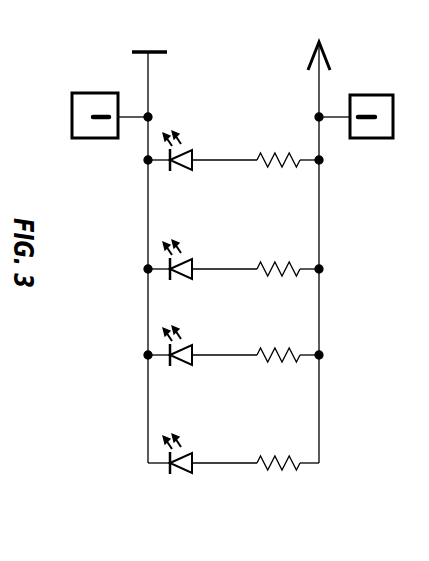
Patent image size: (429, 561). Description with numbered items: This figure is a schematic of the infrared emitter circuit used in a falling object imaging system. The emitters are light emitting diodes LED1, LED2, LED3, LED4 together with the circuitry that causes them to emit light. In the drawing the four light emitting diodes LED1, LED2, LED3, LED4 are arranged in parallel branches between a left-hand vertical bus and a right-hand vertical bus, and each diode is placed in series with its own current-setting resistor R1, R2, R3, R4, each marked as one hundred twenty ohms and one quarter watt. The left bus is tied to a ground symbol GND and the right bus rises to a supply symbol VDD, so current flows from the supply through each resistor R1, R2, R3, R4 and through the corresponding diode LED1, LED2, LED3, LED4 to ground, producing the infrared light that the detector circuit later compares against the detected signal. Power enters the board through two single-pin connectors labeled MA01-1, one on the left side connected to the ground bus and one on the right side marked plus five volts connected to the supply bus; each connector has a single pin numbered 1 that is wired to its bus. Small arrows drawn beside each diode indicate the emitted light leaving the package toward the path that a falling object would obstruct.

The light emitting diode 1 LED1 is at (173, 163).
The light emitting diode 2 LED2 is at (173, 272).
The light emitting diode 3 LED3 is at (173, 358).
The light emitting diode 4 LED4 is at (175, 466).
The resistor 120 Ohm 1/4W R1 is at (289, 161).
The resistor 120 Ohm 1/4W R2 is at (289, 270).
The resistor 120 Ohm 1/4W R3 is at (289, 356).
The resistor 120 Ohm 1/4W R4 is at (289, 464).
The connector (GND / +5) MA01-1 is at (232, 119).
The connector pin 1 is at (234, 110).
The ground symbol GND is at (146, 39).
The VDD power supply symbol VDD is at (304, 51).